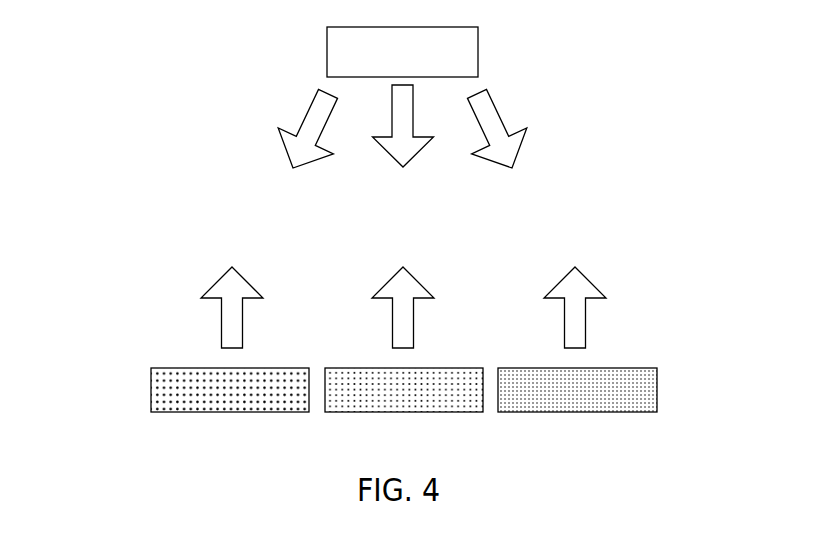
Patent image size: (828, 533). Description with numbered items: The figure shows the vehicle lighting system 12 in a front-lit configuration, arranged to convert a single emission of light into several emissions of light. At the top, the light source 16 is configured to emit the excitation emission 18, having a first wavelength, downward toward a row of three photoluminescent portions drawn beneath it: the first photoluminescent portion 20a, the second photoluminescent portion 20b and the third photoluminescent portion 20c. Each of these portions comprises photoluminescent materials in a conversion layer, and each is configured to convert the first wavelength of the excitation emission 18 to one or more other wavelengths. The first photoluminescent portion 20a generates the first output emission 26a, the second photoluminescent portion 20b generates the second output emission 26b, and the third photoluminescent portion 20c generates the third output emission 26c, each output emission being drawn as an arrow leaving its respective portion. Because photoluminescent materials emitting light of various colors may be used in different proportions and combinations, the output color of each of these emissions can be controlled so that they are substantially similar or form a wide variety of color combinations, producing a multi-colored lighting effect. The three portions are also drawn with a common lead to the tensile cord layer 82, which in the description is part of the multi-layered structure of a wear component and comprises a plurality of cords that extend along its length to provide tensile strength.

The lighting system 12 is at (122, 43).
The light source 16 is at (413, 61).
The excitation emission 18 is at (330, 117).
The first photoluminescent portion 20a is at (172, 368).
The second photoluminescent portion 20b is at (373, 373).
The third photoluminescent portion 20c is at (540, 372).
The first output emission 26a is at (220, 284).
The second output emission 26b is at (392, 283).
The third output emission 26c is at (562, 283).
The tensile cord layer 82 is at (540, 393).